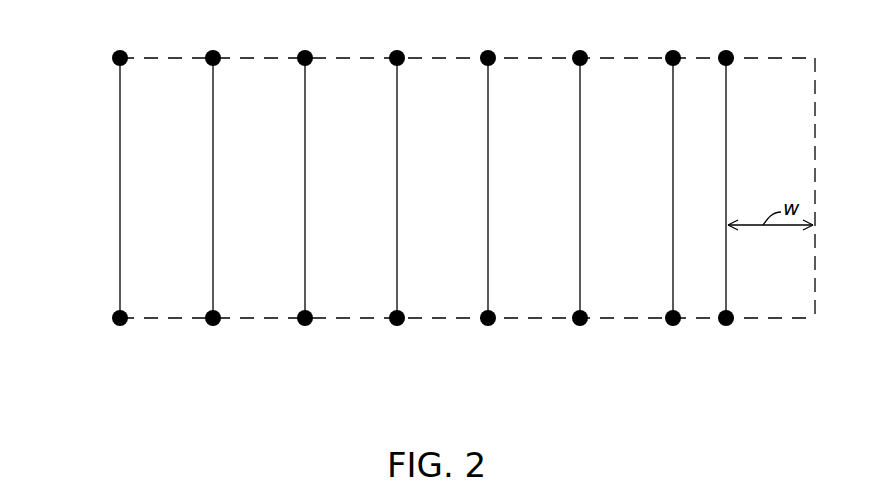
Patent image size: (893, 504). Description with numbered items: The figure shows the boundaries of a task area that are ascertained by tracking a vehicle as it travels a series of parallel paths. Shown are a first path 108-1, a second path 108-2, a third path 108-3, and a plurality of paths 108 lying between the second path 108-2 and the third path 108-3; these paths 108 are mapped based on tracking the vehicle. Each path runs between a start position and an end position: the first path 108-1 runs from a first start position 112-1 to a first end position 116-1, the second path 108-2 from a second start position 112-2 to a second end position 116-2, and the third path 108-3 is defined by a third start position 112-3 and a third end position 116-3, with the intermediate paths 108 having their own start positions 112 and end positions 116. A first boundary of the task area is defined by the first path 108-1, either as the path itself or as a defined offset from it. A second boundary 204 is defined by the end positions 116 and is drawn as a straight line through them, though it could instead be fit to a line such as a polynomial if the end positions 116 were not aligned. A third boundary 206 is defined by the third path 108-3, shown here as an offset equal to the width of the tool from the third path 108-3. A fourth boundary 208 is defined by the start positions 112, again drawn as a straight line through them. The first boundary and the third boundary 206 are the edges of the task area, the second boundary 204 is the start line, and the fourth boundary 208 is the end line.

The paths 108 is at (305, 152).
The first path 108-1 is at (120, 103).
The second path 108-2 is at (213, 108).
The third path 108-3 is at (727, 165).
The start positions 112 is at (301, 324).
The first start position 112-1 is at (116, 324).
The second start position 112-2 is at (209, 324).
The third start position 112-3 is at (730, 323).
The end positions 116 is at (309, 53).
The first end position 116-1 is at (124, 53).
The second end position 116-2 is at (217, 53).
The third end position 116-3 is at (730, 63).
The second boundary 204 is at (766, 58).
The third boundary 206 is at (816, 165).
The fourth boundary 208 is at (640, 318).